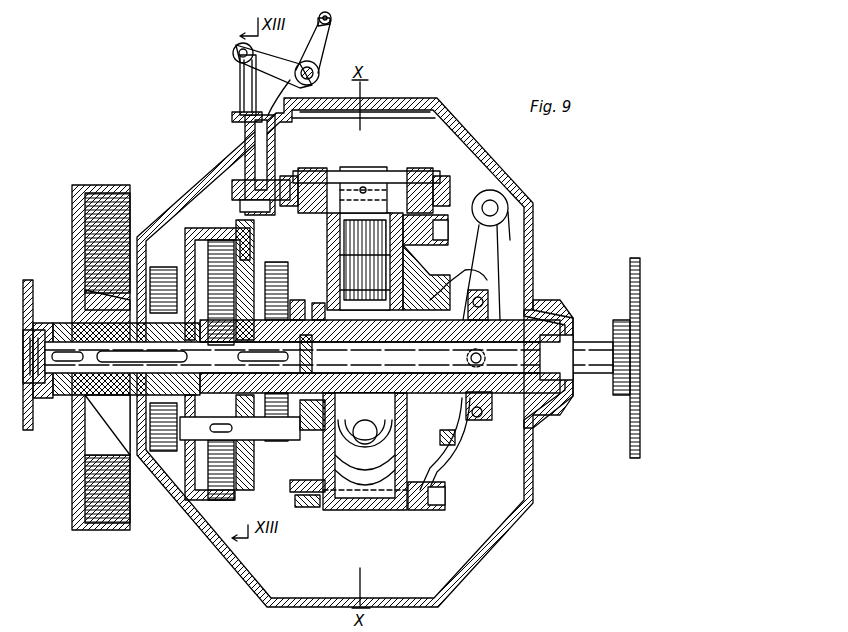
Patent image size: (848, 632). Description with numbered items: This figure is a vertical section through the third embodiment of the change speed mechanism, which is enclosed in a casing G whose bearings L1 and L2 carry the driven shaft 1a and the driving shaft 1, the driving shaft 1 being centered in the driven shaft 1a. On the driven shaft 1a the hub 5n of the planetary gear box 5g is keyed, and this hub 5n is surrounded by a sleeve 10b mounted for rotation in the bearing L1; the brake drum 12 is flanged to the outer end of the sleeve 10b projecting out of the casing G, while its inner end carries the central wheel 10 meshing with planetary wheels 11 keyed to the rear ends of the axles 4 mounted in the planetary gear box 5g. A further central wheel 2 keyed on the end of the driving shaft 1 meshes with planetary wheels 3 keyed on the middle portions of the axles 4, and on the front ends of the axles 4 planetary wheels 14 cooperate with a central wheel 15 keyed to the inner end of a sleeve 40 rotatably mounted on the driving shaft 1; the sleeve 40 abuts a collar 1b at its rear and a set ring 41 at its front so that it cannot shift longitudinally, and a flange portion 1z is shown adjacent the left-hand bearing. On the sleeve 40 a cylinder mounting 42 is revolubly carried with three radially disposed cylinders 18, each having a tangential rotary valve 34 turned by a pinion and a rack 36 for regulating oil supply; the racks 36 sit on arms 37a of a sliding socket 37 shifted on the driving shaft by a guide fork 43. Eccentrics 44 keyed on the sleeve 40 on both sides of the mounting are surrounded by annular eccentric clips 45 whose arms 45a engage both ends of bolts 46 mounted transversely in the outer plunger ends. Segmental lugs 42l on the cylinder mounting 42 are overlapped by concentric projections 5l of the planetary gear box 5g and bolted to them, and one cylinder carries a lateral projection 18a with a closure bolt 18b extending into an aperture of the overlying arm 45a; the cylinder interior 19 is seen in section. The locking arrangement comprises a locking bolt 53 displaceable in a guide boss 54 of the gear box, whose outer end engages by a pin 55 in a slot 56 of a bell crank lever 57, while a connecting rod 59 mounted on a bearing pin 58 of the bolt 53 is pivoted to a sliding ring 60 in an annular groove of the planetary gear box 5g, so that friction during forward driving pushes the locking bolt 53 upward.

The driving shaft 1 is at (586, 352).
The driven shaft 1a is at (60, 390).
The collar 1b is at (255, 362).
The shaft flange 1z is at (110, 440).
The central wheel 2 is at (240, 345).
The planetary wheels 3 is at (220, 242).
The axles 4 is at (200, 432).
The planetary gear box 5g is at (205, 236).
The concentric projections 5l is at (318, 495).
The hub 5n is at (70, 400).
The central wheel 10 is at (166, 270).
The sleeve 10b is at (80, 318).
The planetary wheels 11 is at (160, 300).
The brake drum 12 is at (92, 187).
The planetary wheels 14 is at (275, 265).
The central wheel 15 is at (276, 340).
The cylinders 18 is at (343, 210).
The lateral projection 18a is at (430, 232).
The closure bolt 18b is at (425, 255).
The brake cylinder 19 is at (372, 220).
The rotary valve 34 is at (366, 505).
The racks 36 is at (418, 510).
The sliding socket 37 is at (483, 400).
The arms 37a is at (448, 466).
The sleeve 40 is at (395, 330).
The set ring 41 is at (490, 300).
The cylinder mounting 42 is at (375, 335).
The segmental lugs 42l is at (306, 493).
The guide fork 43 is at (500, 248).
The eccentrics 44 is at (435, 300).
The eccentric clips 45 is at (450, 460).
The arms 45a is at (310, 168).
The bolts 46 is at (412, 180).
The locking bolt 53 is at (240, 84).
The guide boss 54 is at (232, 116).
The pin 55 is at (233, 55).
The slot 56 is at (262, 58).
The bell crank lever 57 is at (324, 44).
The bearing pin 58 is at (245, 150).
The connecting rod 59 is at (245, 200).
The sliding ring 60 is at (284, 180).
The casing G is at (462, 145).
The bearing L1 is at (115, 290).
The bearing L2 is at (553, 320).